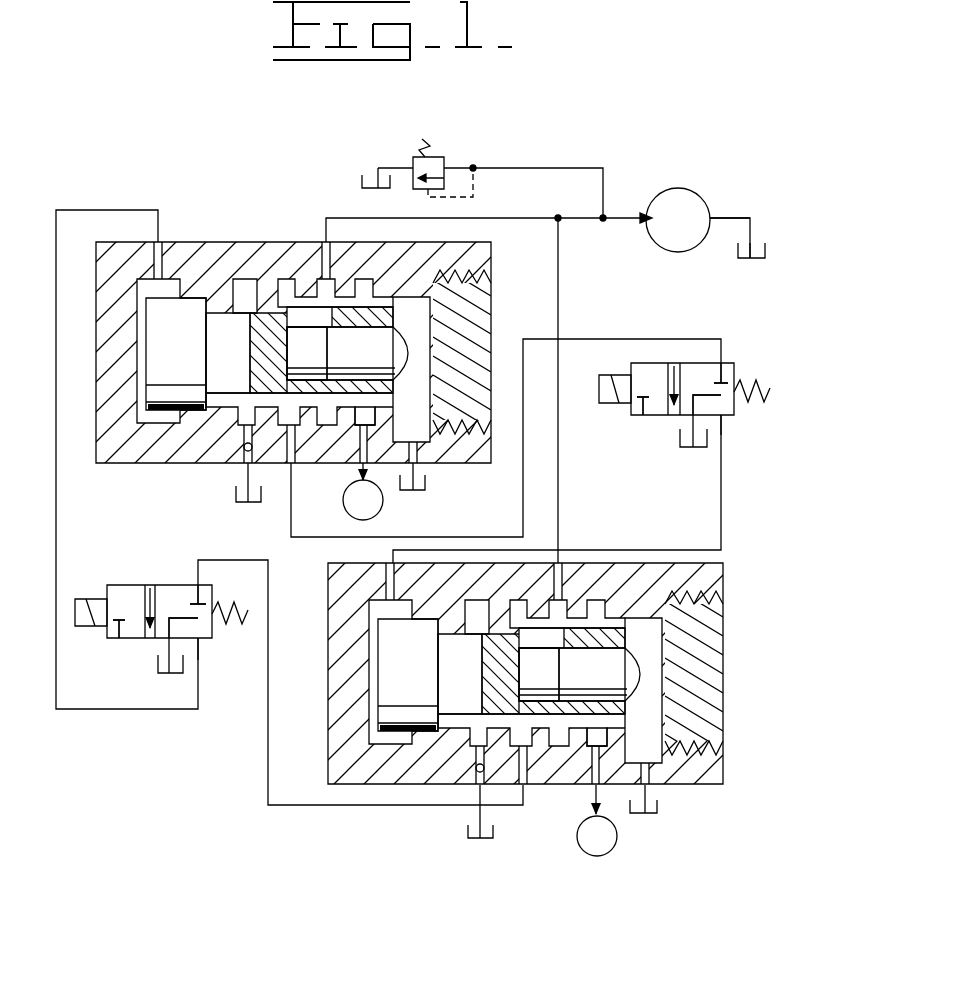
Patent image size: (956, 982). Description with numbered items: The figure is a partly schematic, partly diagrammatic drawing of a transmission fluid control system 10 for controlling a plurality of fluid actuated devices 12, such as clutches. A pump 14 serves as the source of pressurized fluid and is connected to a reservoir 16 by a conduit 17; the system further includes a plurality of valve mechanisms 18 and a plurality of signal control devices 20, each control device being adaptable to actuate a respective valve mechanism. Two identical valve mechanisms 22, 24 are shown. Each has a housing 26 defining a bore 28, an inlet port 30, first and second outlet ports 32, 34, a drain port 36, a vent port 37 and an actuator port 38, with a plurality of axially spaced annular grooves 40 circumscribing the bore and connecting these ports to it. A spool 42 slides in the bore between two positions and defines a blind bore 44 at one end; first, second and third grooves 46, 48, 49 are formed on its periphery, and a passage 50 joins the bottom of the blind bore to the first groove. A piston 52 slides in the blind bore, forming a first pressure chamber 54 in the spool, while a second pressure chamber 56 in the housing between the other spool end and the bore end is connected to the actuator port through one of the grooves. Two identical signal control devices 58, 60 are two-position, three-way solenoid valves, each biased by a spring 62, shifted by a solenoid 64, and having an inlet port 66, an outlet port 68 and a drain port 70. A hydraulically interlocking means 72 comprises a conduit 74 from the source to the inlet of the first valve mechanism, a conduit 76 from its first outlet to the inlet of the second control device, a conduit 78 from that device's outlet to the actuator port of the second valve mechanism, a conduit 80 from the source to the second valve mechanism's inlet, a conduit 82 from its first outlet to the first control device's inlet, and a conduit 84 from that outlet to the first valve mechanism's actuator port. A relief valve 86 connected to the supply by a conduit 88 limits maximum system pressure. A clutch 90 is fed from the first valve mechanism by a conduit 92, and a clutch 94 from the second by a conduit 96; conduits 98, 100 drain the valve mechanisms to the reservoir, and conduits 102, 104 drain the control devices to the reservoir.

The fluid control system 10 is at (172, 832).
The fluid actuated devices 12 is at (216, 504).
The pump 14 is at (666, 233).
The reservoir 16 is at (362, 176).
The conduit 17 is at (727, 218).
The valve mechanisms 18 is at (588, 460).
The signal control devices 20 is at (637, 316).
The valve mechanism 22 is at (236, 198).
The valve mechanism 24 is at (520, 848).
The housing 26 is at (140, 463).
The bore 28 is at (393, 310).
The inlet port 30 is at (325, 242).
The first outlet port 32 is at (246, 465).
The second outlet port 34 is at (360, 464).
The drain port 36 is at (420, 465).
The vent port 37 is at (244, 447).
The actuator port 38 is at (156, 245).
The annular grooves 40 is at (262, 283).
The spool 42 is at (170, 355).
The blind bore 44 is at (270, 366).
The first groove 46 is at (240, 293).
The second groove 48 is at (384, 405).
The third groove 49 is at (233, 425).
The passage 50 is at (262, 332).
The piston 52 is at (412, 357).
The first pressure chamber 54 is at (300, 357).
The second pressure chamber 56 is at (150, 328).
The signal control device 58 is at (112, 592).
The signal control device 60 is at (632, 370).
The spring 62 is at (768, 390).
The solenoid 64 is at (605, 404).
The inlet port 66 is at (723, 360).
The outlet port 68 is at (733, 416).
The drain port 70 is at (693, 416).
The hydraulically interlocking means 72 is at (266, 818).
The conduit 74 is at (490, 218).
The conduit 76 is at (292, 538).
The conduit 78 is at (718, 548).
The conduit 80 is at (558, 258).
The conduit 82 is at (268, 732).
The conduit 84 is at (58, 516).
The relief valve 86 is at (438, 157).
The conduit 88 is at (605, 180).
The clutch 90 is at (345, 505).
The conduit 92 is at (385, 498).
The clutch 94 is at (589, 855).
The conduit 96 is at (582, 818).
The conduit 98 is at (425, 480).
The conduit 100 is at (660, 813).
The conduit 102 is at (205, 665).
The conduit 104 is at (723, 440).